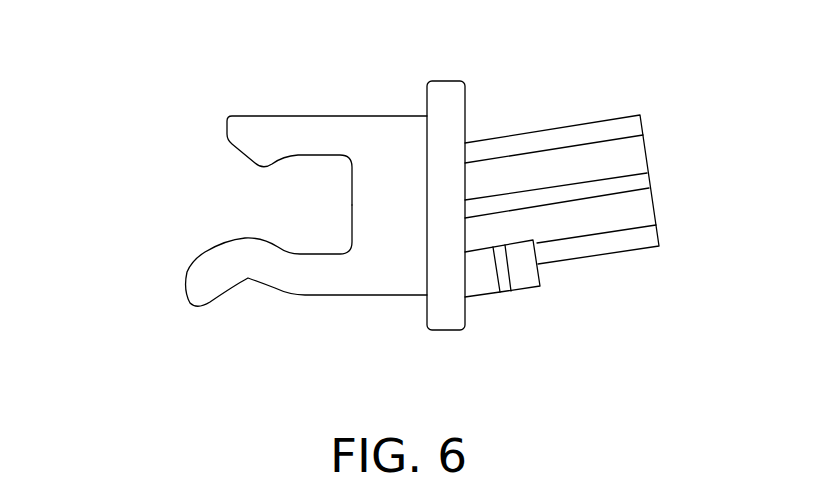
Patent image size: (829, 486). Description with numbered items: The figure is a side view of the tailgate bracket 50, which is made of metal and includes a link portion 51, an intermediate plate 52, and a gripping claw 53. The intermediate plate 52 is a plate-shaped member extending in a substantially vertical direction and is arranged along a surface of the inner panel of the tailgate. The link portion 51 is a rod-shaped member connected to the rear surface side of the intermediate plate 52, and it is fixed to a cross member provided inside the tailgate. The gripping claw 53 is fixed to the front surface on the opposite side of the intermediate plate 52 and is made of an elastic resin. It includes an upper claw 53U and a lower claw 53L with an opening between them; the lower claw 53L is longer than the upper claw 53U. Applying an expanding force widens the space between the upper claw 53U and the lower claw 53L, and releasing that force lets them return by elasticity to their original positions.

The tailgate bracket 50 is at (305, 83).
The link portion 51 is at (623, 160).
The intermediate plate 52 is at (427, 307).
The gripping claw 53 is at (73, 155).
The upper claw 53U is at (238, 144).
The lower claw 53L is at (187, 277).